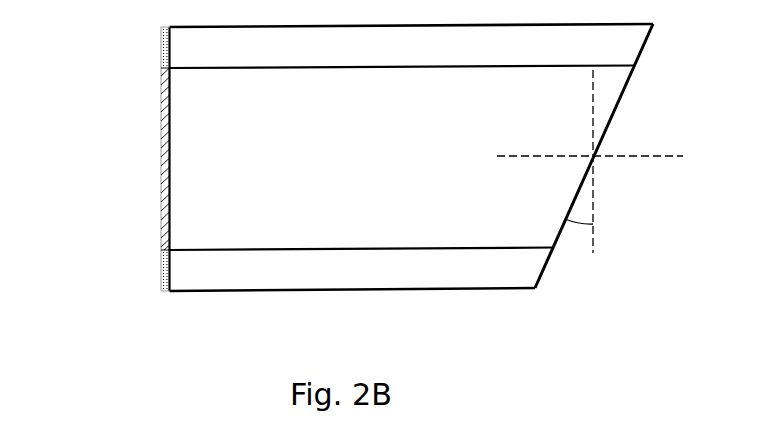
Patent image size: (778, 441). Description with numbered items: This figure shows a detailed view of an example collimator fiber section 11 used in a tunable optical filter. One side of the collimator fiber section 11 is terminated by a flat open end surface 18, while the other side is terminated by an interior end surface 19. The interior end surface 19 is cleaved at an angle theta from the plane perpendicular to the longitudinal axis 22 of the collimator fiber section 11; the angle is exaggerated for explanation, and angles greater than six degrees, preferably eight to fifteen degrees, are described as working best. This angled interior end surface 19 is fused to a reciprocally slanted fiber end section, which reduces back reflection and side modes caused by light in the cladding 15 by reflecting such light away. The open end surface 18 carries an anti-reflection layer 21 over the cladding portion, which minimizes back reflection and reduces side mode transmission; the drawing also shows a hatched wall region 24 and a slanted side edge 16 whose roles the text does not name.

The collimator fiber section 11 is at (245, 328).
The cladding 15 is at (447, 272).
The inclined side wall 16 is at (610, 93).
The flat open end surface 18 is at (81, 102).
The interior end surface 19 is at (635, 126).
The anti-reflection layer 21 is at (160, 48).
The longitudinal axis 22 is at (652, 156).
The hatched section of front wall 24 is at (163, 143).